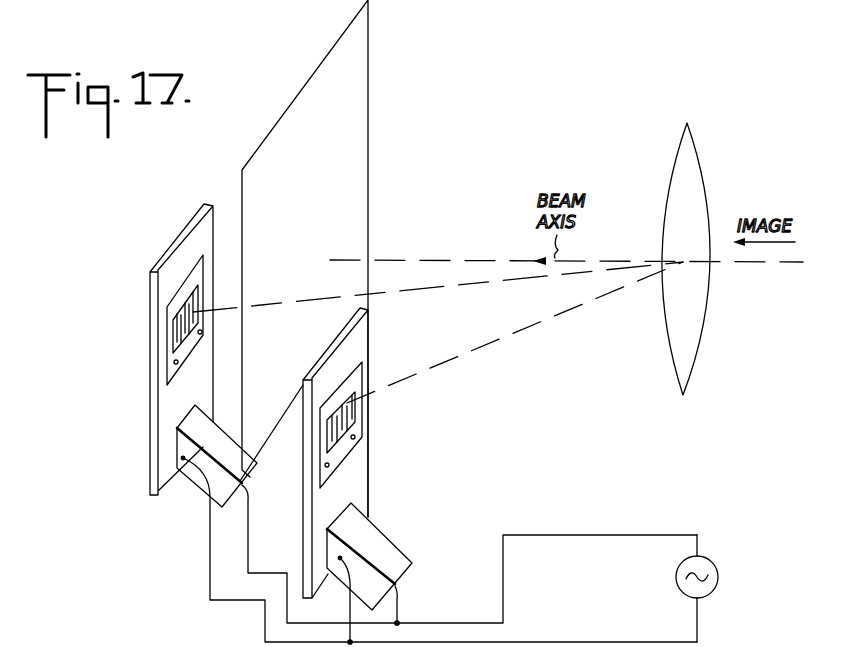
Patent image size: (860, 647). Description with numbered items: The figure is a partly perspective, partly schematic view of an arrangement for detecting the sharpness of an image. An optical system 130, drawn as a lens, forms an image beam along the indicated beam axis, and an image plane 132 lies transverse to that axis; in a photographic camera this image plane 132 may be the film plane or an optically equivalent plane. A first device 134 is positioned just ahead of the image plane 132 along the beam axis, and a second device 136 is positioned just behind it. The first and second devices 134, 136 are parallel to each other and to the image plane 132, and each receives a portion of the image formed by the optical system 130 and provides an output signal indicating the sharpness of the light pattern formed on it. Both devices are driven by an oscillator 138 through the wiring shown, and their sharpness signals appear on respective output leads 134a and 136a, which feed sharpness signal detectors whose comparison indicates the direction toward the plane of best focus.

The optical system 130 is at (692, 160).
The image plane 132 is at (358, 50).
The first device 134 is at (324, 347).
The output lead 134a is at (327, 465).
The second device 136 is at (160, 246).
The output lead 136a is at (200, 332).
The oscillator 138 is at (706, 565).